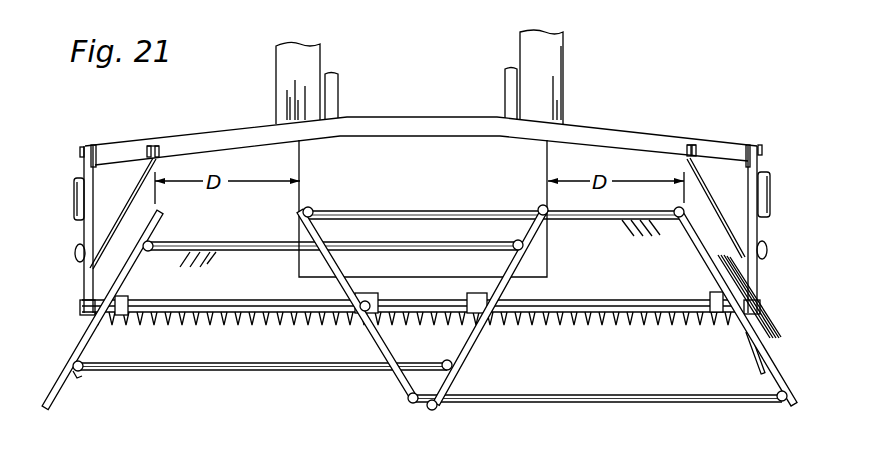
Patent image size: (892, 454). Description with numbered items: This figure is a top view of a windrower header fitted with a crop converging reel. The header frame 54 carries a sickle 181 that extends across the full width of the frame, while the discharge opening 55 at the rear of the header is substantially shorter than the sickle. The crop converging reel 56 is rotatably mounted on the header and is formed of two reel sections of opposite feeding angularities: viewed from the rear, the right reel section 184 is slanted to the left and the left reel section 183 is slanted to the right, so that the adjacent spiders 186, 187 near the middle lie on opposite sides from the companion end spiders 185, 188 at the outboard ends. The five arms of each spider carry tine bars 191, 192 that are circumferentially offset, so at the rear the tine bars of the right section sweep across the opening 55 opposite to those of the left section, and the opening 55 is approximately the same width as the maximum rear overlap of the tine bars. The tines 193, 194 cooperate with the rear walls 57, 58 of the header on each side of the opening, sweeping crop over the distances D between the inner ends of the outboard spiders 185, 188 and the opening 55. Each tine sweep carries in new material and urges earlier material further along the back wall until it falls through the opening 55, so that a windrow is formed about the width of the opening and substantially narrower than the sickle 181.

The header frame 54 is at (662, 124).
The discharge opening 55 is at (548, 180).
The crop converging reel 56 is at (325, 373).
The rear wall of header 57 is at (603, 160).
The rear wall of header 58 is at (228, 163).
The sickle 181 is at (592, 322).
The left reel section 183 is at (553, 404).
The right reel section 184 is at (235, 372).
The end spider 185 is at (777, 360).
The adjacent spider 186 is at (397, 388).
The adjacent spider 187 is at (463, 365).
The end spider 188 is at (57, 397).
The tine bar 191 is at (590, 220).
The tine bar 192 is at (277, 248).
The tines 193 is at (625, 228).
The tines 194 is at (222, 243).